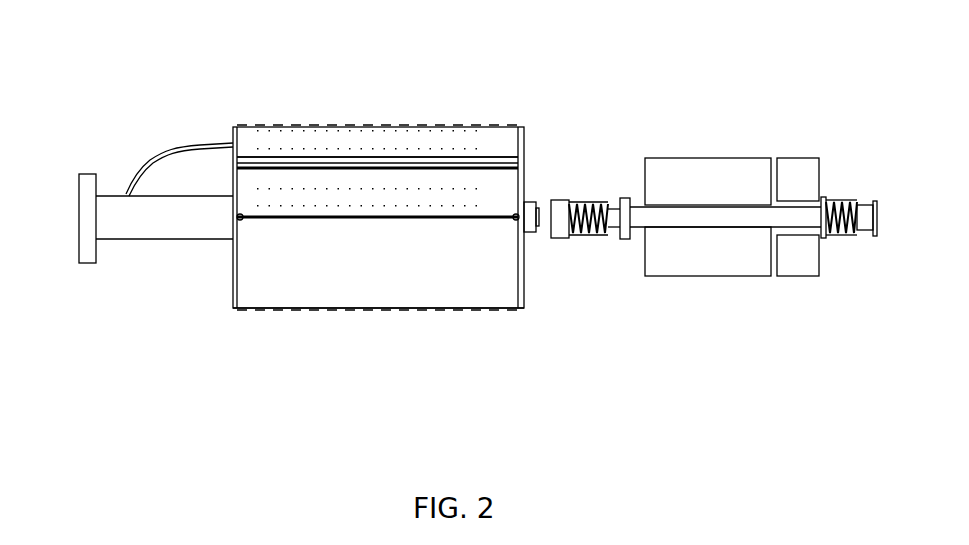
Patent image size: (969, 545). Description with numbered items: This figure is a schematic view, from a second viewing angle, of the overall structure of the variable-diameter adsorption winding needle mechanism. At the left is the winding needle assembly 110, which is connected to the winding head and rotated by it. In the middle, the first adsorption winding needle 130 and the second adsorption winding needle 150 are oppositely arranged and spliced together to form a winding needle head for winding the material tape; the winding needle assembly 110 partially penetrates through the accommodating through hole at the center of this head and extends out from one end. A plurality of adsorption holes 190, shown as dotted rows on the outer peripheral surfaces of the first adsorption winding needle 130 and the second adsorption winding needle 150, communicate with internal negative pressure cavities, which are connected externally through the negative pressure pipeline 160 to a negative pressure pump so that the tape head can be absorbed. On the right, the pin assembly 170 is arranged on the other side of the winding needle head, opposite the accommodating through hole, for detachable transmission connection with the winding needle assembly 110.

The winding needle assembly 110 is at (130, 220).
The first adsorption winding needle 130 is at (387, 127).
The second adsorption winding needle 150 is at (402, 308).
The negative pressure pipeline 160 is at (170, 153).
The pin assembly 170 is at (713, 193).
The adsorption holes 190 is at (302, 148).